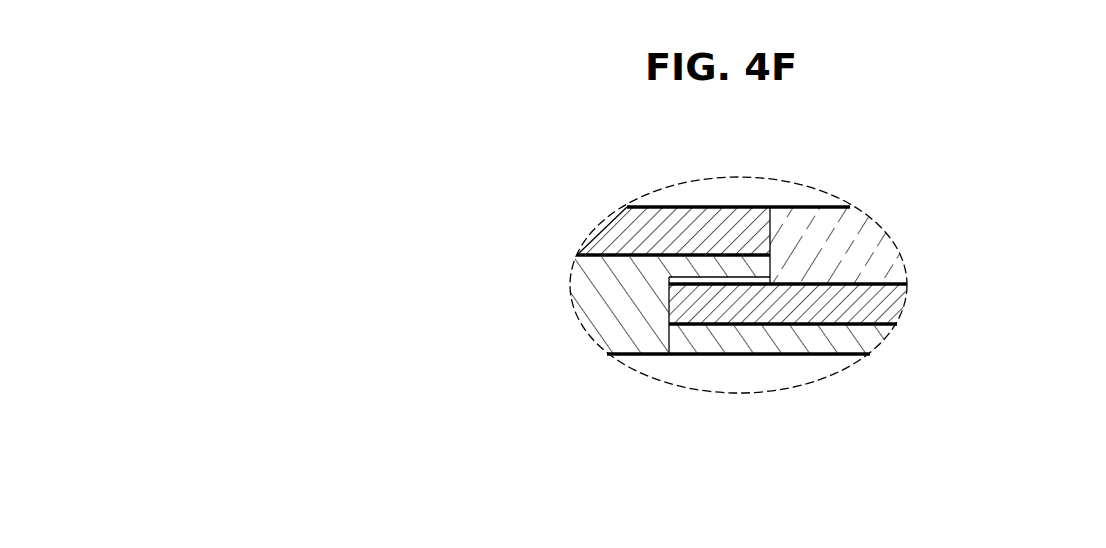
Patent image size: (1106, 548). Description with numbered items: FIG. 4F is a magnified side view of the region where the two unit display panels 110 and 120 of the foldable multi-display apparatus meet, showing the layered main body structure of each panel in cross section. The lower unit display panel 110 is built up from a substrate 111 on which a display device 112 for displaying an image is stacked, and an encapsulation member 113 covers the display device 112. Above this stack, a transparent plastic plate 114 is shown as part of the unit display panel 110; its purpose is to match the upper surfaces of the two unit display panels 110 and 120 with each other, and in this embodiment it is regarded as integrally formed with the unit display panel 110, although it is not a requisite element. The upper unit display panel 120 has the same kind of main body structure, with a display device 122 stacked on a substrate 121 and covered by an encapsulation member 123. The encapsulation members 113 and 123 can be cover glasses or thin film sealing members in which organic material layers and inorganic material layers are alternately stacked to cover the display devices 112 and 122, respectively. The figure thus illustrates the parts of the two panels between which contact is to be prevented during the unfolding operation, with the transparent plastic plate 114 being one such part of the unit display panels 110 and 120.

The unit display panel 110 is at (1000, 225).
The substrate 111 is at (888, 300).
The display device 112 is at (897, 323).
The encapsulation member 113 is at (870, 338).
The transparent plastic plate 114 is at (873, 242).
The unit display panel 120 is at (490, 195).
The substrate 121 is at (615, 235).
The display device 122 is at (577, 256).
The encapsulation member 123 is at (595, 317).